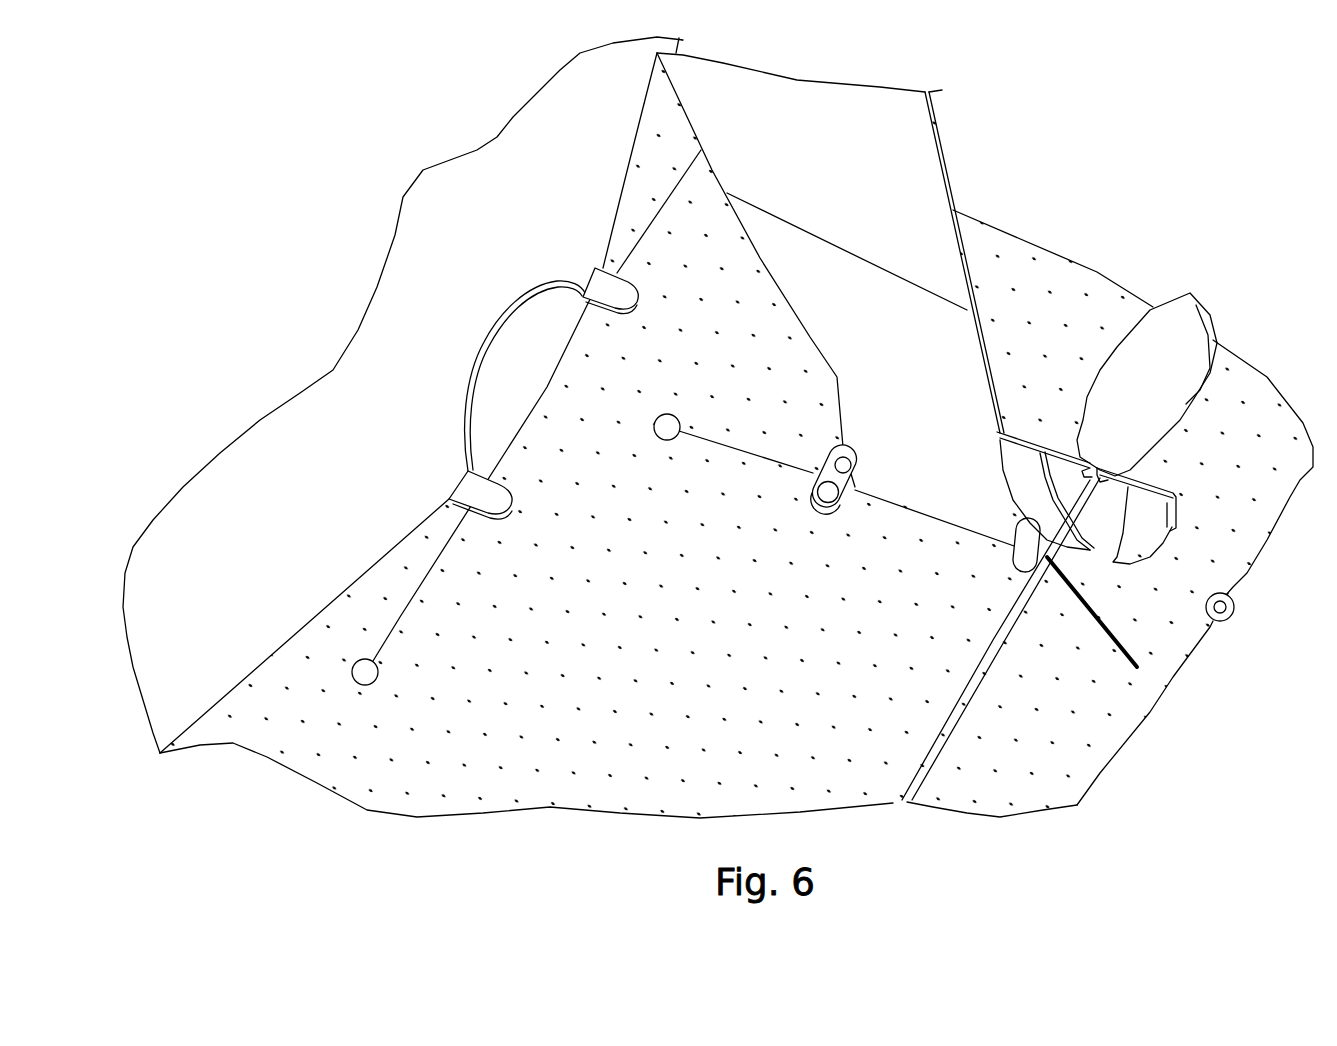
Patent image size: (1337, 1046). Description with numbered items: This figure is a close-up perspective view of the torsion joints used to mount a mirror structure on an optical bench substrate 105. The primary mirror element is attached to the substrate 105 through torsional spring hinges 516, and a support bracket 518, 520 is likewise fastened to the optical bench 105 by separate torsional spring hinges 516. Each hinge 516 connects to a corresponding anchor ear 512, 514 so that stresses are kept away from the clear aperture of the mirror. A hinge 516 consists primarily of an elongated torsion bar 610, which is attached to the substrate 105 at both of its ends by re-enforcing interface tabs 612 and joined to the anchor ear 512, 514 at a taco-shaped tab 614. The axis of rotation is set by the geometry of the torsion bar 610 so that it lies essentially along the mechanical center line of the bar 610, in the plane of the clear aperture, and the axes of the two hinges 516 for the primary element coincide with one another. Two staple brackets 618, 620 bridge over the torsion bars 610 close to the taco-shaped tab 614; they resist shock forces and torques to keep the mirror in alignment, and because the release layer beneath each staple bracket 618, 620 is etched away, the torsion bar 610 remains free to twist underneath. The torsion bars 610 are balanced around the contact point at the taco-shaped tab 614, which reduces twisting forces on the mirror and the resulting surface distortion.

The optical bench substrate 105 is at (1069, 198).
The anchor ear 512 is at (600, 427).
The anchor ear 514 is at (445, 287).
The torsional spring hinge 516 is at (440, 565).
The support bracket 518 is at (587, 211).
The support bracket 520 is at (850, 327).
The elongated torsion bar 610 is at (763, 460).
The re-enforcing interface tab 612 is at (653, 427).
The taco-shaped tab 614 is at (497, 433).
The staple bracket 618 is at (470, 500).
The staple bracket 620 is at (623, 310).